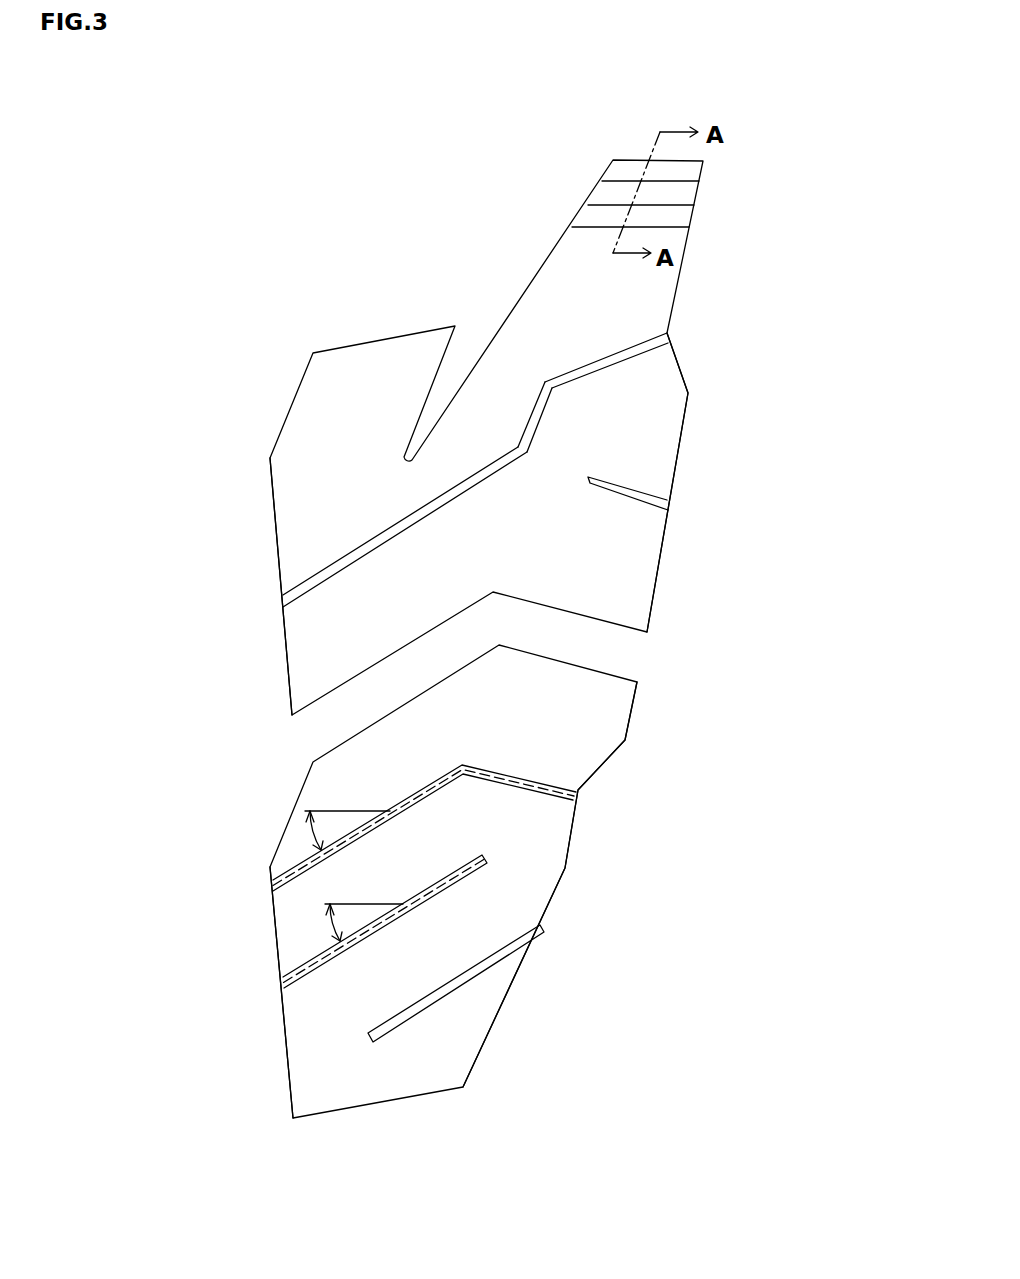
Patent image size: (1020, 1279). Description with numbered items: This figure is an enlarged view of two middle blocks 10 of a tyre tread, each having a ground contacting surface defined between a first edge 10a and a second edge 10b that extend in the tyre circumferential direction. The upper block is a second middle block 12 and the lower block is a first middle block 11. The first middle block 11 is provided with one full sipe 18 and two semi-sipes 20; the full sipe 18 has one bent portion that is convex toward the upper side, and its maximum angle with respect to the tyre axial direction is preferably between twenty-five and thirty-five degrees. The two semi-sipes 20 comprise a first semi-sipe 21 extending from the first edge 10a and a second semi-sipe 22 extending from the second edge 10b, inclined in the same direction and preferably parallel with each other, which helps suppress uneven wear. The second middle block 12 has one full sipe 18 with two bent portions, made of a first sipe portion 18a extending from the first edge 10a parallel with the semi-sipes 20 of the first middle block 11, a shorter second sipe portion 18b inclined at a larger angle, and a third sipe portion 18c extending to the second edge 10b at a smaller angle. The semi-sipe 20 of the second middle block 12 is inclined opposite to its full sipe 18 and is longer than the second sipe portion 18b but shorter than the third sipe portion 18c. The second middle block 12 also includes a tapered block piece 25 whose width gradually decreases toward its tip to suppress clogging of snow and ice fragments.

The middle block 10 is at (548, 639).
The first middle block 11 is at (427, 943).
The second middle block 12 is at (513, 485).
The first edge 10a is at (277, 533).
The second edge 10b is at (688, 413).
The full sipe 18 is at (476, 536).
The first sipe portion 18a is at (377, 540).
The second sipe portion 18b is at (533, 418).
The third sipe portion 18c is at (598, 362).
The semi-sipe 20 is at (625, 492).
The first semi-sipe 21 is at (377, 925).
The second semi-sipe 22 is at (452, 988).
The tapered block piece 25 is at (593, 247).